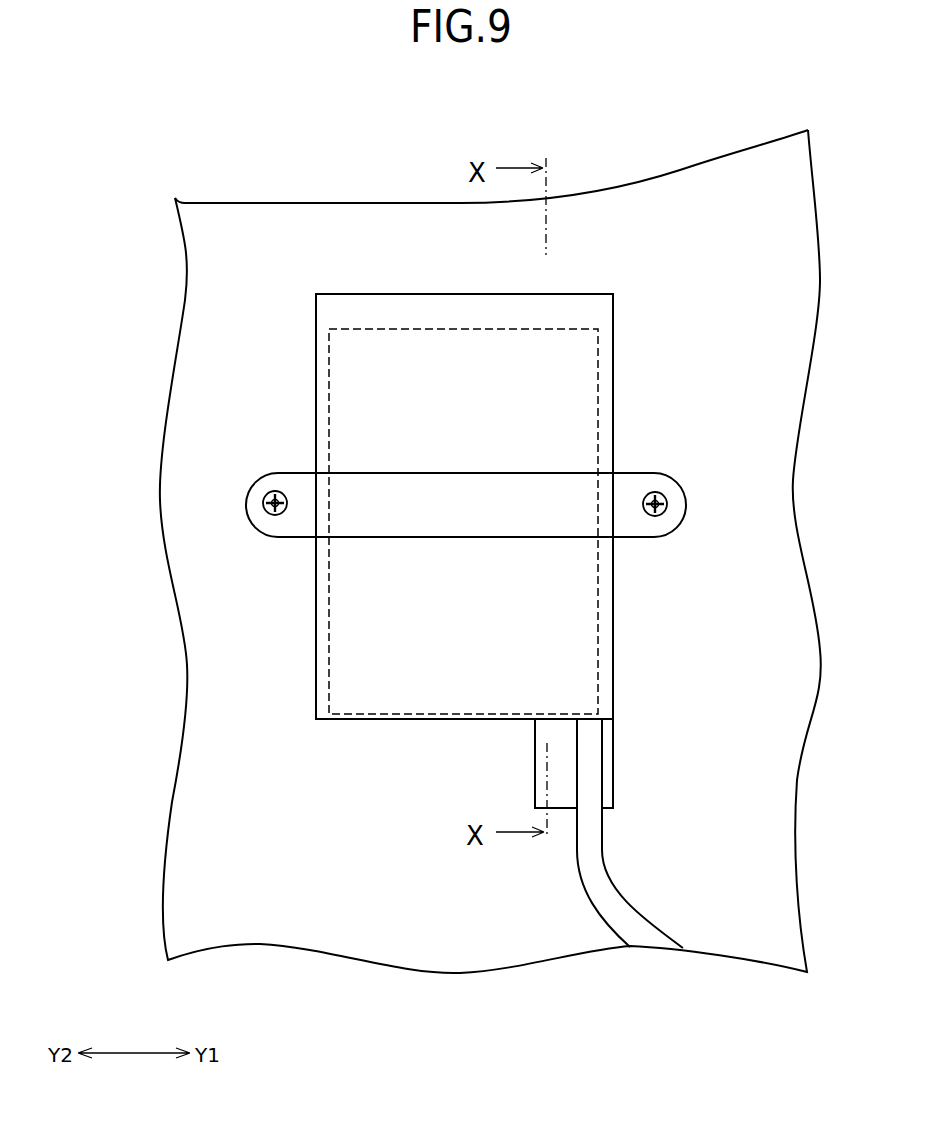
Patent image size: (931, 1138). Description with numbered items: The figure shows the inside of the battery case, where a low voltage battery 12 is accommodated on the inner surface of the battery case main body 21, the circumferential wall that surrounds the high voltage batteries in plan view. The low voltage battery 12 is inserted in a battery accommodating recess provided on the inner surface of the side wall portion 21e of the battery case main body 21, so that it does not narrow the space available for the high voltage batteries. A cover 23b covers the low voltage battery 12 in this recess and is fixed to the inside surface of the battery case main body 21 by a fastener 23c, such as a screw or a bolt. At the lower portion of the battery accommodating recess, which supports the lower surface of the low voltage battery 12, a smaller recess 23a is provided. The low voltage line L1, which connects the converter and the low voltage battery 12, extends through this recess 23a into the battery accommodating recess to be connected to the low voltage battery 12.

The battery case main body 21 is at (318, 202).
The side wall portion 21e is at (225, 212).
The cover 23b is at (602, 311).
The low voltage battery 12 is at (598, 430).
The fastener 23c is at (277, 508).
The recess 23a is at (607, 765).
The line L1 is at (643, 937).